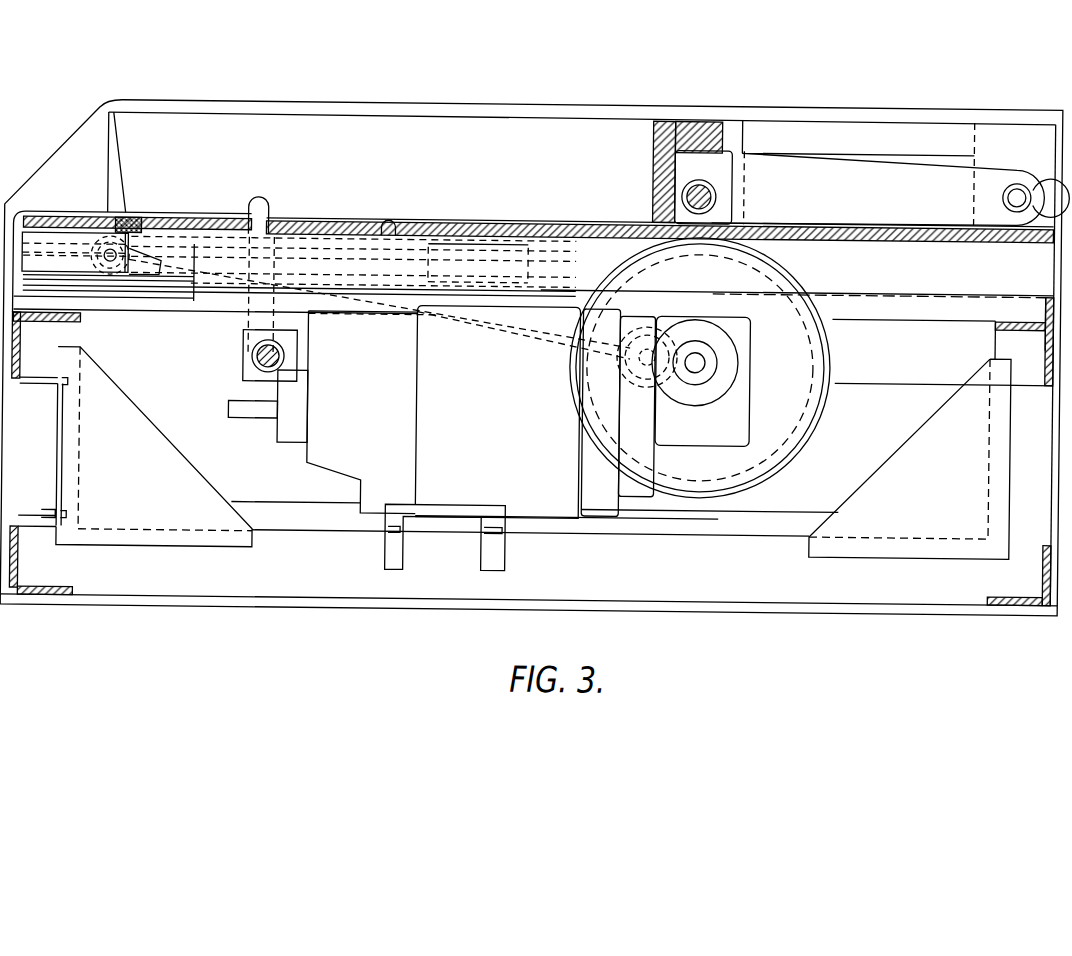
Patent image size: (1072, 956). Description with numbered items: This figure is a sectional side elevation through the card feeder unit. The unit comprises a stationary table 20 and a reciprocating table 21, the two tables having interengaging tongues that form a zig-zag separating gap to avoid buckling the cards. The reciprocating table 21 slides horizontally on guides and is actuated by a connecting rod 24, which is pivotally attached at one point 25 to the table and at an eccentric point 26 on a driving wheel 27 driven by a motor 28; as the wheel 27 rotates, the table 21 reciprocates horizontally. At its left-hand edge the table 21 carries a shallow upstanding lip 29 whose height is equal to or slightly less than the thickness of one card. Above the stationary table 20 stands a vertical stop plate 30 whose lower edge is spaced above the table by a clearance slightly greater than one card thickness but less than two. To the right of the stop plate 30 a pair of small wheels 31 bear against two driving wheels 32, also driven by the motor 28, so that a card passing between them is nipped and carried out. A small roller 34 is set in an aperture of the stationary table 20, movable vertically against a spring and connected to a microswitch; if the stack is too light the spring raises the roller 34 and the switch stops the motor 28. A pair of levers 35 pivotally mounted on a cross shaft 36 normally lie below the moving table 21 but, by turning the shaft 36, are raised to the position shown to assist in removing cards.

The stationary table 20 is at (546, 222).
The reciprocating table 21 is at (156, 222).
The connecting rod 24 is at (477, 304).
The pivotal attachment to the table 25 is at (110, 266).
The eccentric pivot point 26 is at (647, 337).
The driving wheel 27 is at (825, 370).
The motor 28 is at (508, 460).
The upstanding lip 29 is at (120, 222).
The stop plate 30 is at (651, 152).
The small wheels 31 is at (722, 186).
The driving wheels 32 is at (819, 303).
The roller 34 is at (387, 222).
The levers 35 is at (263, 205).
The cross shaft 36 is at (258, 369).